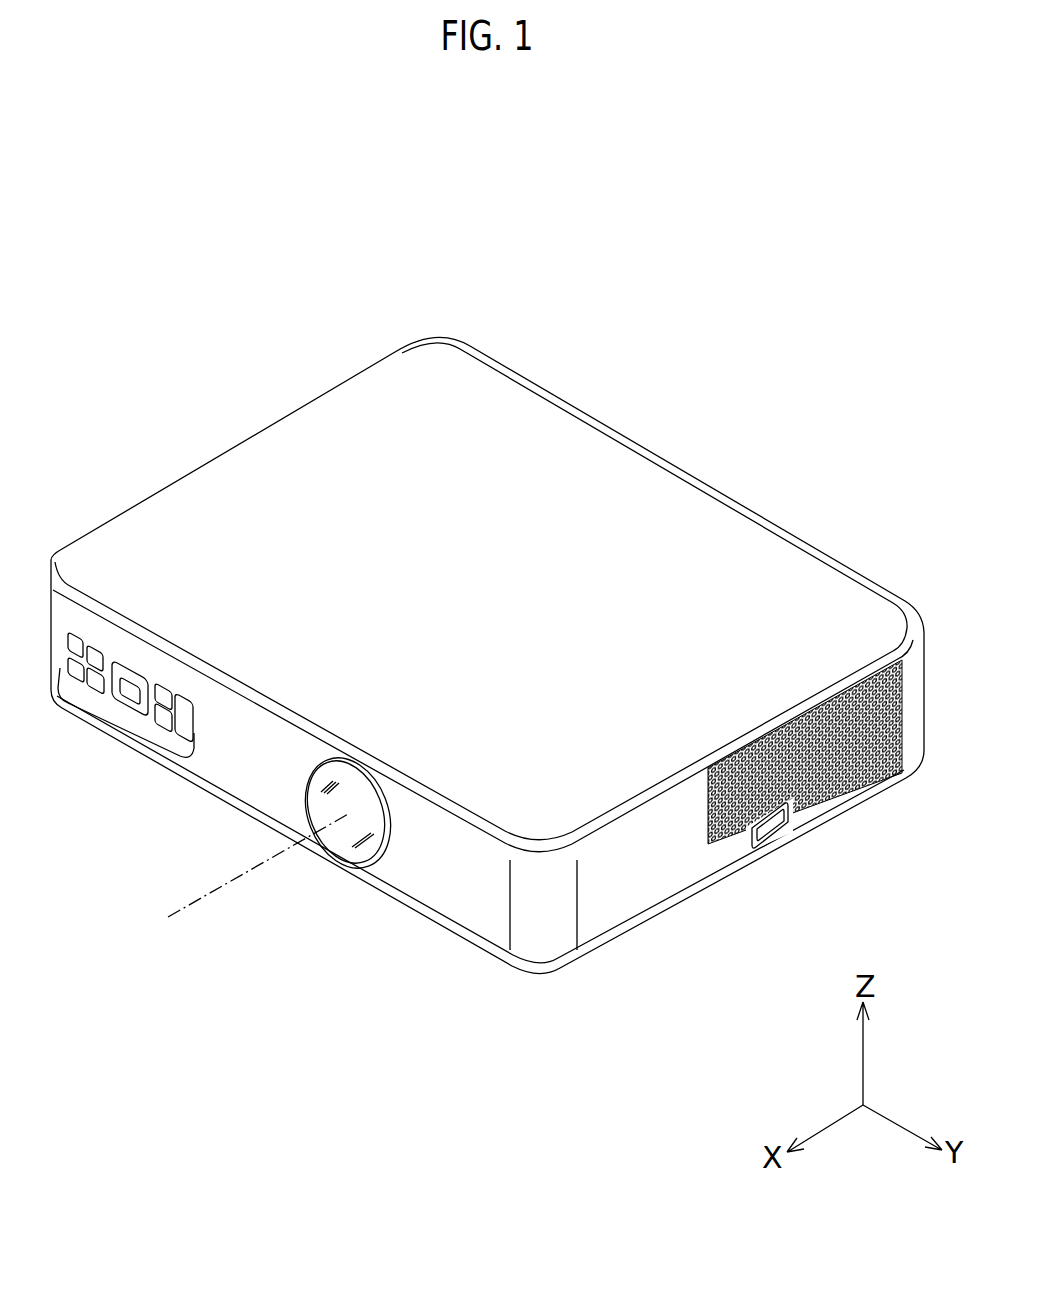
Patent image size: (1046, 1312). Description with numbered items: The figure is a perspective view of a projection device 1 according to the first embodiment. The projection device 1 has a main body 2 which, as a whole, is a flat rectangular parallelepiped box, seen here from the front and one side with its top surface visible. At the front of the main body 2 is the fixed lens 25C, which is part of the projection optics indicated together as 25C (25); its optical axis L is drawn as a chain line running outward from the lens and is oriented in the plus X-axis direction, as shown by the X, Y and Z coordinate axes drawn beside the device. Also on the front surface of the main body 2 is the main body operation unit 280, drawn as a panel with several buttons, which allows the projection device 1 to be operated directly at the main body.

The projection device 1 is at (484, 648).
The main body 2 is at (243, 477).
The projection optical device 25 is at (344, 845).
The fixed lens 25C is at (342, 838).
The main body operation unit 280 is at (117, 722).
The optical axis L is at (248, 880).